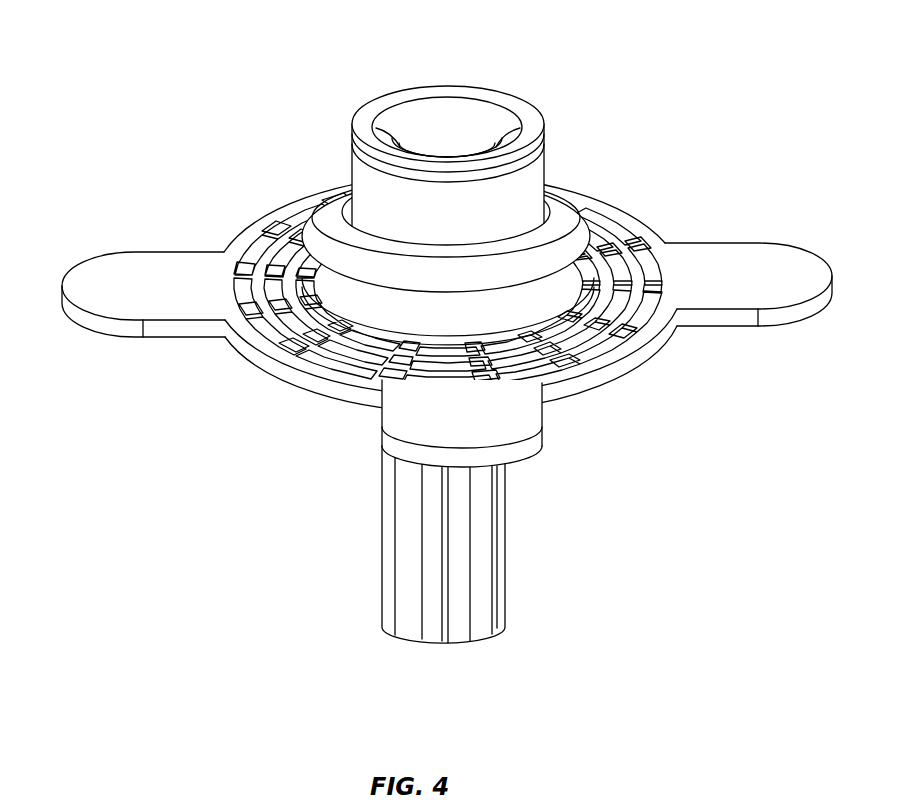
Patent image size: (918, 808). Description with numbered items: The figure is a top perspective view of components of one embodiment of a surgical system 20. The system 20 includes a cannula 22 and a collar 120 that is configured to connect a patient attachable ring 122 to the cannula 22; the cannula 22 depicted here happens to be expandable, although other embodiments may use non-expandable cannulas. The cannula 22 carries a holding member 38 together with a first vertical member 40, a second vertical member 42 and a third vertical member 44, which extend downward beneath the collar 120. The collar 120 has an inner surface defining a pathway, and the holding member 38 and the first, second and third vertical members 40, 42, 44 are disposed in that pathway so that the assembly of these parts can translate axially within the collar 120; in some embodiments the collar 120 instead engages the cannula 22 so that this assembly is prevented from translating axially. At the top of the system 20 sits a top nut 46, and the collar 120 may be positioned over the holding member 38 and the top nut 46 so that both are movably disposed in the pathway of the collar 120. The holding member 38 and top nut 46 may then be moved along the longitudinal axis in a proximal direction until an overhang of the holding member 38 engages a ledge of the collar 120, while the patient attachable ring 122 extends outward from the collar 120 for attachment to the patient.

The system 20 is at (332, 62).
The cannula 22 is at (543, 519).
The holding member 38 is at (365, 177).
The first vertical member 40 is at (508, 557).
The second vertical member 42 is at (445, 592).
The third vertical member 44 is at (428, 626).
The top nut 46 is at (507, 97).
The collar 120 is at (574, 164).
The patient attachable ring 122 is at (128, 358).